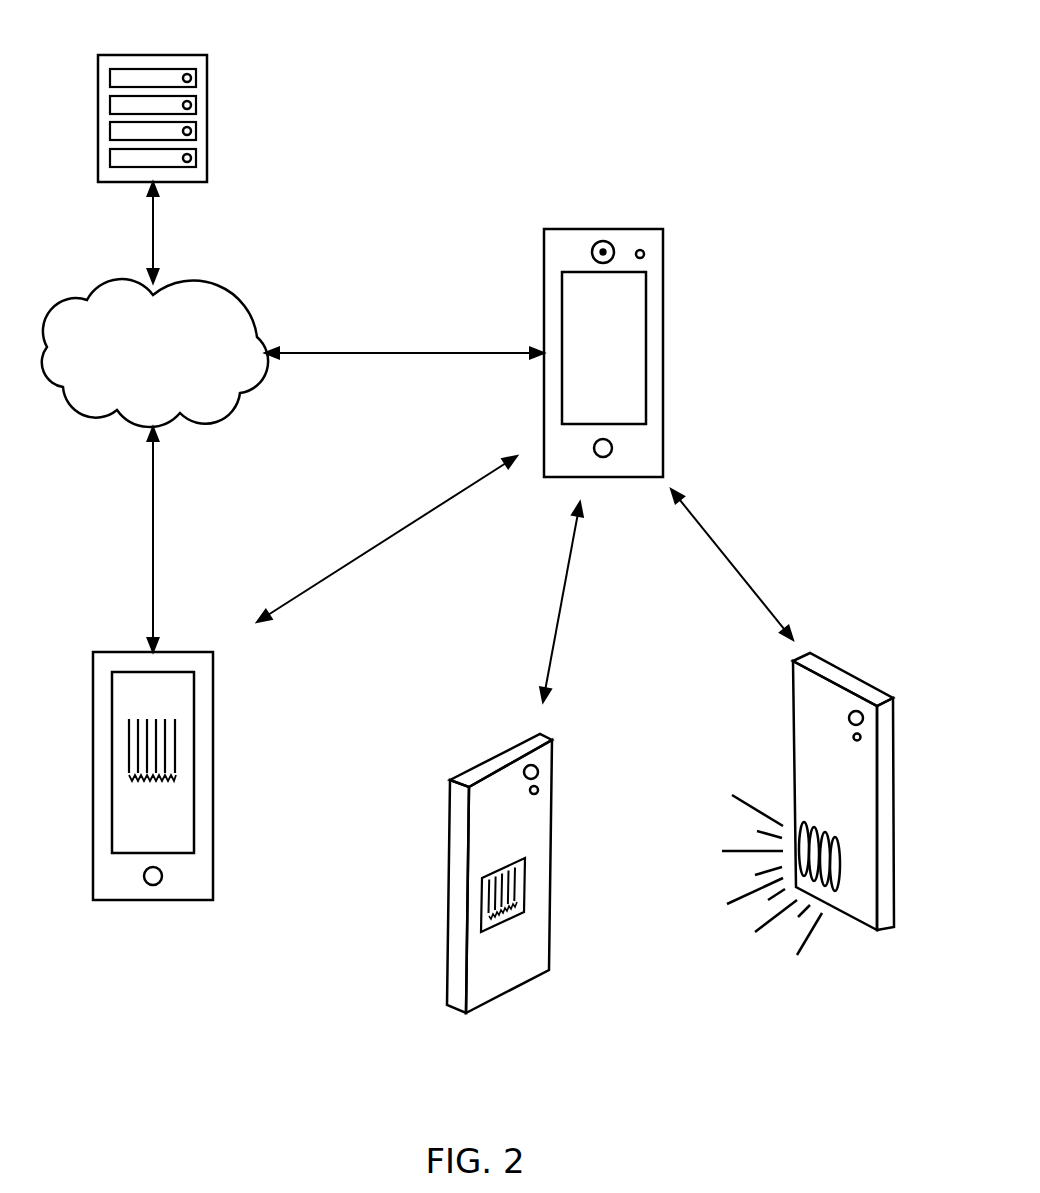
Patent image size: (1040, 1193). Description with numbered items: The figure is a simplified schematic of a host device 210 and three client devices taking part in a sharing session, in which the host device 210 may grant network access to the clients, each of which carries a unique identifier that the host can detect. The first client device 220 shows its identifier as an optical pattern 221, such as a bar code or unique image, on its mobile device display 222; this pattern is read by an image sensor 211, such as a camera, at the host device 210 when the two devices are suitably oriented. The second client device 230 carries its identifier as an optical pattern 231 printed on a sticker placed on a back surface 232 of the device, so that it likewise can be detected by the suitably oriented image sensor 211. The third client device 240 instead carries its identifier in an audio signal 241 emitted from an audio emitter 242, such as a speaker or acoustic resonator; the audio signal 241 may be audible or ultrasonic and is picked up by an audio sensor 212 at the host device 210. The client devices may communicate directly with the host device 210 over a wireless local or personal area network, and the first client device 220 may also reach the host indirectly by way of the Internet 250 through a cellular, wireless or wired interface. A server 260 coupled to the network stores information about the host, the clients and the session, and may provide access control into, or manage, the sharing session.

The host device 210 is at (636, 229).
The image sensor 211 is at (599, 241).
The audio sensor 212 is at (644, 254).
The first client device 220 is at (173, 652).
The optical pattern 221 is at (129, 752).
The mobile device display 222 is at (194, 806).
The second client device 230 is at (540, 734).
The optical pattern 231 is at (525, 885).
The surface 232 is at (533, 821).
The third client device 240 is at (820, 655).
The audio signal 241 is at (812, 958).
The audio emitter 242 is at (840, 853).
The Internet 250 is at (200, 283).
The server 260 is at (196, 158).